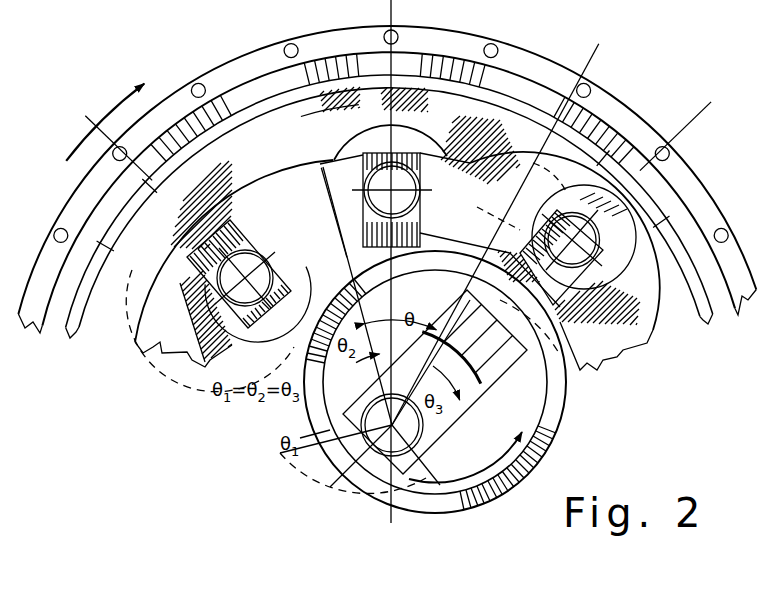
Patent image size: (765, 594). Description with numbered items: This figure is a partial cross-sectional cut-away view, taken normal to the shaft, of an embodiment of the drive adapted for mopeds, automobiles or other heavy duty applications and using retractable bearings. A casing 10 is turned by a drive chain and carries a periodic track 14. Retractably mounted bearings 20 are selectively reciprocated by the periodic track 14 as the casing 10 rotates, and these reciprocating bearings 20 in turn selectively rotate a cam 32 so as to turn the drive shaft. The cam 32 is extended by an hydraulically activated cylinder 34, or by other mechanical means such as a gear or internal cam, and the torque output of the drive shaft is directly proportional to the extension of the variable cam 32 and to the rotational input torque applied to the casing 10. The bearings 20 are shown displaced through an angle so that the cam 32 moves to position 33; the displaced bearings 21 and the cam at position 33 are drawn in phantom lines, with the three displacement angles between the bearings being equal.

The casing 10 is at (545, 43).
The periodic track 14 is at (152, 249).
The retractably mounted bearings 20 is at (372, 136).
The bearings in phantom position 21 is at (176, 372).
The cam 32 is at (545, 437).
The cam position 33 is at (250, 443).
The hydraulically activated cylinder 34 is at (460, 332).